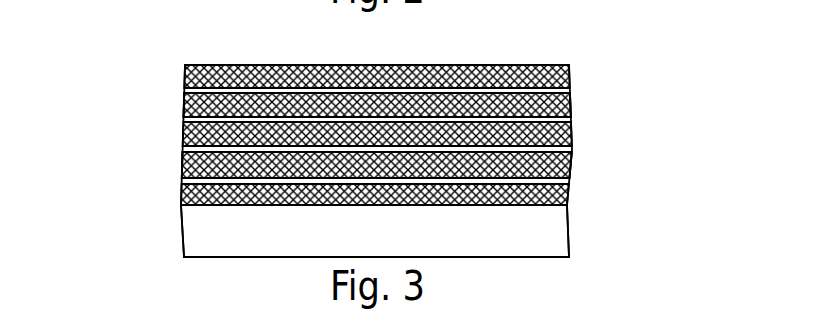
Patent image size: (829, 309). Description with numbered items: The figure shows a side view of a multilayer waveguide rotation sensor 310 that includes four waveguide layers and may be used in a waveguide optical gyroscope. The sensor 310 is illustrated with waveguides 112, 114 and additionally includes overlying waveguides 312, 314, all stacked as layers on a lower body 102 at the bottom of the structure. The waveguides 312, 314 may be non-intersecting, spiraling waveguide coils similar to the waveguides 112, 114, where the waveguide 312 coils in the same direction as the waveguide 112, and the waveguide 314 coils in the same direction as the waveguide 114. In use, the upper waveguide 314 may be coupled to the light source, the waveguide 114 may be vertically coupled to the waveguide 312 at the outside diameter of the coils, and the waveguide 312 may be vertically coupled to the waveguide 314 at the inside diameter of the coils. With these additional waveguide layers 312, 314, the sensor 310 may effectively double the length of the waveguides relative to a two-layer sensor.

The multilayer waveguide rotation sensor 310 is at (314, 128).
The waveguide 314 is at (436, 83).
The waveguide 312 is at (318, 101).
The waveguide 114 is at (434, 155).
The waveguide 112 is at (318, 160).
The substrate 102 is at (181, 237).